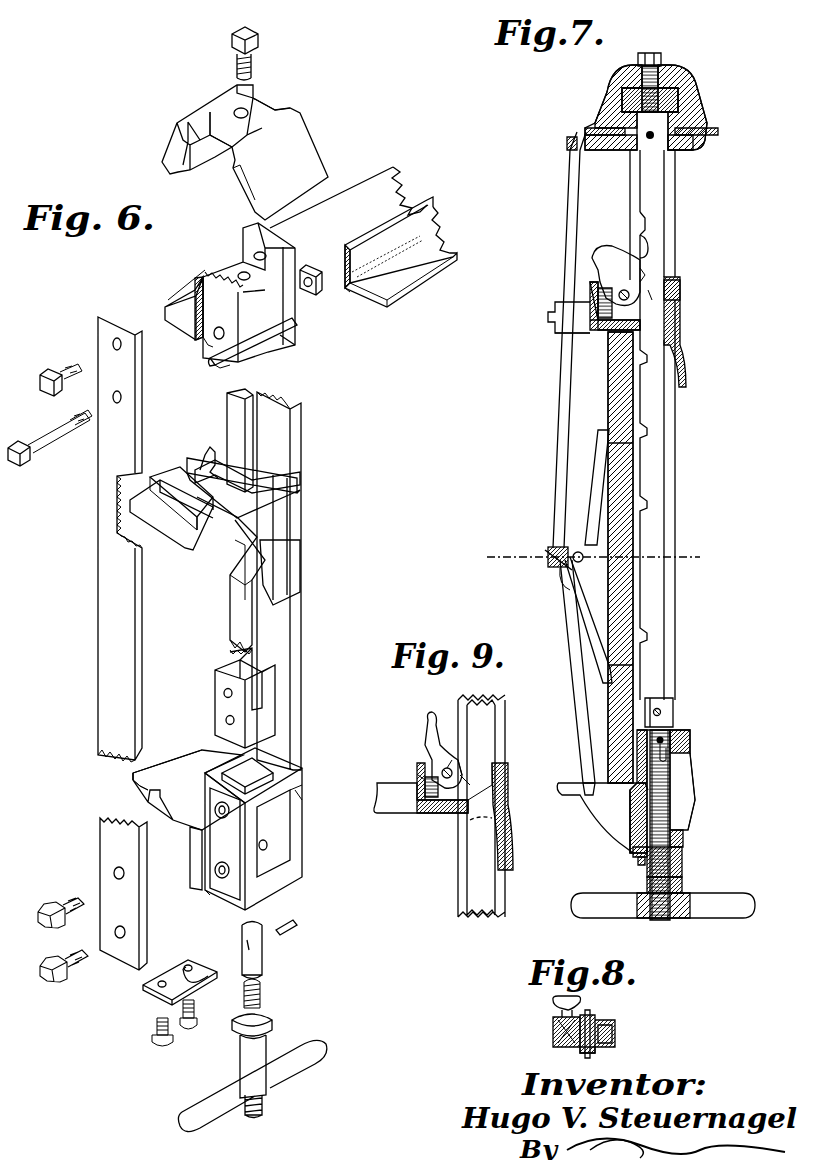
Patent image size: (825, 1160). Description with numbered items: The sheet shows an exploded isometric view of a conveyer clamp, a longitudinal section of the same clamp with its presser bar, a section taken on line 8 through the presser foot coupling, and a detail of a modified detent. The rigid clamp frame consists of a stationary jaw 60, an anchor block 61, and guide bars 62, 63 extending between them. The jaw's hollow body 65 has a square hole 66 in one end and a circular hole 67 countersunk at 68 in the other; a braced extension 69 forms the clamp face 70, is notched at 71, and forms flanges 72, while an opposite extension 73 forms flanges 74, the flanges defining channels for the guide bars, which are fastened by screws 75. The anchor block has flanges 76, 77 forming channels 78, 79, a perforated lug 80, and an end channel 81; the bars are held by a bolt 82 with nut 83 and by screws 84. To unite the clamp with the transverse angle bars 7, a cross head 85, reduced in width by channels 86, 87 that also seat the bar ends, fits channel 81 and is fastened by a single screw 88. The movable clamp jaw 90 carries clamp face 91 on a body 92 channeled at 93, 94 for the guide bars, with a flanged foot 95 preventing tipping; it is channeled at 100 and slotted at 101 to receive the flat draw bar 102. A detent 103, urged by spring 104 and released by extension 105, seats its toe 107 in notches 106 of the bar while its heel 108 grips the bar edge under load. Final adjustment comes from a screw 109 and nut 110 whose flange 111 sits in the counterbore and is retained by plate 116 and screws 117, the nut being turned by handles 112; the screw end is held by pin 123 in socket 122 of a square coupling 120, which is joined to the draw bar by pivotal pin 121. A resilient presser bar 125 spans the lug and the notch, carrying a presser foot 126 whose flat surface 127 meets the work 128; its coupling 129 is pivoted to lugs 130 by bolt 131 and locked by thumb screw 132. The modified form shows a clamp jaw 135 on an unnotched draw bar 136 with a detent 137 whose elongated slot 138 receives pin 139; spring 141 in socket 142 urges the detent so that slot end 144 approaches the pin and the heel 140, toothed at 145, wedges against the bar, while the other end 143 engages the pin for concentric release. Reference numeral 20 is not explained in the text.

In FIG. 6, the angle bars 7 is at (394, 172).
In FIG. 7, the angle bars 7 is at (585, 128).
In FIG. 7, the section line 8— 8 is at (604, 557).
In FIG. 6, the housing block 20 is at (280, 860).
In FIG. 7, the housing block 20 is at (698, 810).
In FIG. 6, the stationary jaw 60 is at (228, 770).
In FIG. 7, the stationary jaw 60 is at (602, 818).
In FIG. 6, the anchor block 61 is at (205, 350).
In FIG. 7, the anchor block 61 is at (605, 100).
In FIG. 6, the guide bar 62 is at (110, 627).
In FIG. 6, the guide bar 63 is at (300, 432).
In FIG. 6, the body 65 is at (283, 878).
In FIG. 6, the square hole 66 is at (255, 783).
In FIG. 7, the square hole 66 is at (690, 745).
In FIG. 7, the circular hole 67 is at (684, 835).
In FIG. 7, the countersink 68 is at (683, 855).
In FIG. 6, the braced extension 69 is at (190, 830).
In FIG. 6, the clamp face 70 is at (189, 790).
In FIG. 7, the clamp face 70 is at (590, 780).
In FIG. 6, the notch 71 is at (130, 780).
In FIG. 6, the flange 72 is at (210, 890).
In FIG. 6, the extension 73 is at (300, 795).
In FIG. 6, the flange 74 is at (302, 776).
In FIG. 6, the bolts or screws 75 is at (42, 968).
In FIG. 6, the flange 76 is at (195, 322).
In FIG. 6, the flange 77 is at (280, 345).
In FIG. 6, the channel 78 is at (225, 366).
In FIG. 6, the channel 79 is at (300, 300).
In FIG. 7, the perforated lug 80 is at (566, 141).
In FIG. 6, the channel 81 is at (262, 285).
In FIG. 6, the bolt 82 is at (42, 445).
In FIG. 7, the bolt 82 is at (655, 140).
In FIG. 6, the nut 83 is at (346, 293).
In FIG. 6, the screw 84 is at (47, 368).
In FIG. 6, the cross head 85 is at (245, 152).
In FIG. 7, the cross head 85 is at (705, 81).
In FIG. 6, the channel 86 is at (222, 148).
In FIG. 6, the channel 87 is at (272, 103).
In FIG. 6, the screw 88 is at (231, 60).
In FIG. 7, the screw 88 is at (660, 54).
In FIG. 6, the movable clamp jaw 90 is at (222, 545).
In FIG. 7, the movable clamp jaw 90 is at (678, 320).
In FIG. 6, the clamp face 91 is at (178, 535).
In FIG. 7, the clamp face 91 is at (565, 335).
In FIG. 6, the body 92 is at (228, 555).
In FIG. 6, the channel 93 is at (185, 510).
In FIG. 6, the channel 94 is at (258, 465).
In FIG. 6, the flanged foot 95 is at (280, 598).
In FIG. 6, the channel 100 is at (165, 475).
In FIG. 7, the channel 100 is at (548, 315).
In FIG. 6, the slot 101 is at (262, 500).
In FIG. 7, the slot 101 is at (682, 290).
In FIG. 6, the draw bar 102 is at (238, 453).
In FIG. 7, the draw bar 102 is at (650, 192).
In FIG. 6, the detent 103 is at (205, 465).
In FIG. 7, the detent 103 is at (610, 275).
In FIG. 7, the spring 104 is at (590, 300).
In FIG. 7, the extension 105 is at (640, 250).
In FIG. 7, the notches 106 is at (630, 222).
In FIG. 7, the toe 107 is at (650, 290).
In FIG. 7, the heel 108 is at (645, 270).
In FIG. 6, the screw 109 is at (262, 986).
In FIG. 7, the screw 109 is at (672, 882).
In FIG. 6, the nut 110 is at (258, 1037).
In FIG. 7, the nut 110 is at (685, 893).
In FIG. 6, the flange 111 is at (272, 1016).
In FIG. 6, the handles 112 is at (296, 1057).
In FIG. 7, the handles 112 is at (716, 908).
In FIG. 6, the plate 116 is at (145, 990).
In FIG. 7, the plate 116 is at (633, 852).
In FIG. 6, the screws 117 is at (152, 1028).
In FIG. 7, the screws 117 is at (635, 862).
In FIG. 6, the coupling 120 is at (275, 698).
In FIG. 7, the coupling 120 is at (672, 720).
In FIG. 6, the pivotal pin 121 is at (220, 692).
In FIG. 7, the pivotal pin 121 is at (661, 710).
In FIG. 7, the socket 122 is at (698, 772).
In FIG. 6, the pin 123 is at (292, 928).
In FIG. 7, the pin 123 is at (670, 793).
In FIG. 7, the presser bar 125 is at (560, 424).
In FIG. 8, the presser bar 125 is at (553, 1035).
In FIG. 7, the presser foot 126 is at (600, 478).
In FIG. 8, the presser foot 126 is at (612, 1025).
In FIG. 7, the flat surface 127 is at (645, 513).
In FIG. 7, the work 128 is at (625, 478).
In FIG. 7, the coupling 129 is at (555, 563).
In FIG. 8, the coupling 129 is at (575, 1052).
In FIG. 7, the lugs 130 is at (548, 548).
In FIG. 8, the lugs 130 is at (598, 1020).
In FIG. 7, the bolt 131 is at (580, 575).
In FIG. 8, the bolt 131 is at (614, 1032).
In FIG. 7, the thumb screw 132 is at (545, 552).
In FIG. 8, the thumb screw 132 is at (555, 1000).
In FIG. 9, the clamp jaw 135 is at (510, 806).
In FIG. 9, the draw bar 136 is at (478, 881).
In FIG. 9, the detent 137 is at (428, 723).
In FIG. 9, the elongated slot 138 is at (418, 778).
In FIG. 9, the pin 139 is at (447, 792).
In FIG. 9, the heel 140 is at (452, 765).
In FIG. 9, the spring 141 is at (418, 808).
In FIG. 9, the socket 142 is at (440, 805).
In FIG. 9, the slot end 143 is at (470, 800).
In FIG. 9, the slot end 144 is at (458, 762).
In FIG. 9, the fine teeth 145 is at (462, 775).